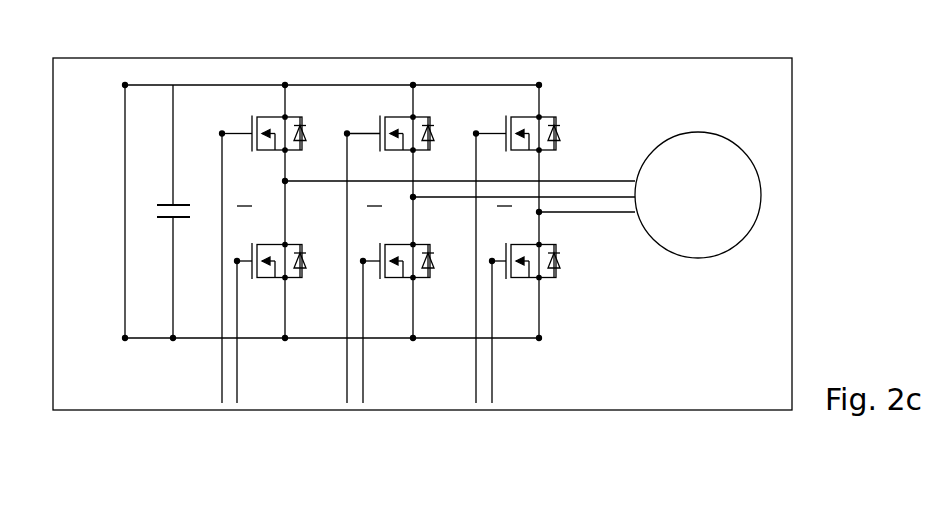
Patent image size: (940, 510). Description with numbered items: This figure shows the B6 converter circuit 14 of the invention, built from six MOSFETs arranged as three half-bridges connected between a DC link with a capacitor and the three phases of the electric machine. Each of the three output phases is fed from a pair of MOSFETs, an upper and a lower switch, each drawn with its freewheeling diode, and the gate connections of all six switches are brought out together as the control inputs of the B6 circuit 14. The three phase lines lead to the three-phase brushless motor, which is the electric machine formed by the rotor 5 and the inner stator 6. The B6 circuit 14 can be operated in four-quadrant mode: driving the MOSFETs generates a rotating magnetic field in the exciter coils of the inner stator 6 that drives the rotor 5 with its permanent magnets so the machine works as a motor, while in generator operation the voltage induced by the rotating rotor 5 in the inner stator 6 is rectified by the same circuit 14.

The B6 circuit 14 is at (552, 398).
The rotor 5 is at (748, 180).
The inner stator 6 is at (748, 181).